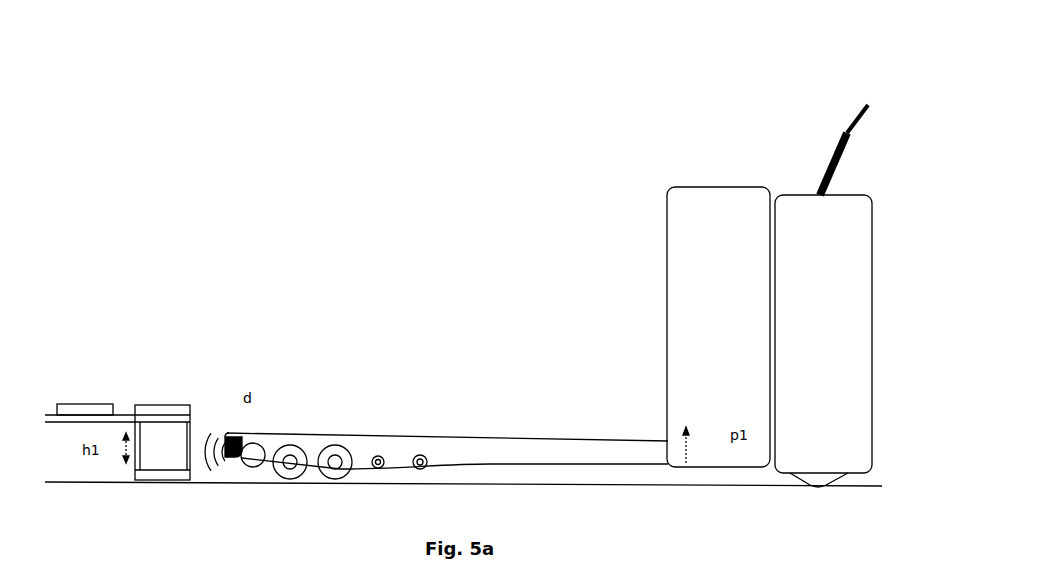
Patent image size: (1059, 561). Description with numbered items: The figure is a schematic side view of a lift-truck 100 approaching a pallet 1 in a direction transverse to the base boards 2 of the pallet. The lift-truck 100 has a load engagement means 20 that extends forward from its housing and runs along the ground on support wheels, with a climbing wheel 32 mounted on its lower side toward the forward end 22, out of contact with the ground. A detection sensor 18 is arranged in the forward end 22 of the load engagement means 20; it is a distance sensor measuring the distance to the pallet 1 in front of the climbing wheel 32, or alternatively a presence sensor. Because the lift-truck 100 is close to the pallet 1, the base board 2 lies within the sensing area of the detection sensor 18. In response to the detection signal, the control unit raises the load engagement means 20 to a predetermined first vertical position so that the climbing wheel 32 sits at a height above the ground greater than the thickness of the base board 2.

The pallet 1 is at (117, 374).
The base board 2 is at (157, 470).
The detection sensor 18 is at (241, 456).
The load engagement means 20 is at (474, 437).
The forward end 22 is at (243, 434).
The climbing wheel 32 is at (261, 456).
The lift-truck 100 is at (698, 114).